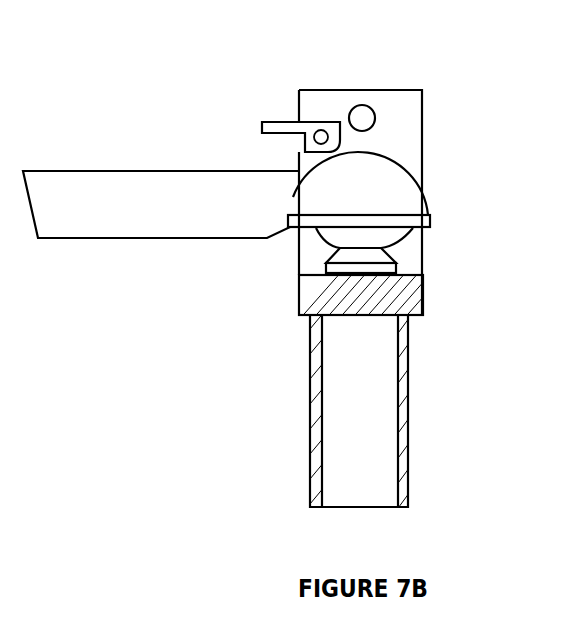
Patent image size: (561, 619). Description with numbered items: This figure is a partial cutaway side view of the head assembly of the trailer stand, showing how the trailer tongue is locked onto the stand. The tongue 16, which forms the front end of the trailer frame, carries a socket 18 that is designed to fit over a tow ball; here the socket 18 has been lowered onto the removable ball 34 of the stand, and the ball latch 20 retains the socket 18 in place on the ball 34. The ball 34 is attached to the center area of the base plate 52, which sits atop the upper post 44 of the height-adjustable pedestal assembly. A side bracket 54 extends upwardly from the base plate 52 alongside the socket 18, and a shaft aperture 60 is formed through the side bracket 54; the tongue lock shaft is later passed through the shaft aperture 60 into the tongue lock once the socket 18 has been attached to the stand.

The tongue 16 is at (72, 238).
The socket 18 is at (394, 172).
The ball latch 20 is at (272, 122).
The removable ball 34 is at (387, 236).
The upper post 44 is at (360, 418).
The base plate 52 is at (299, 297).
The side brackets 54 is at (320, 90).
The shaft apertures 60 is at (370, 105).